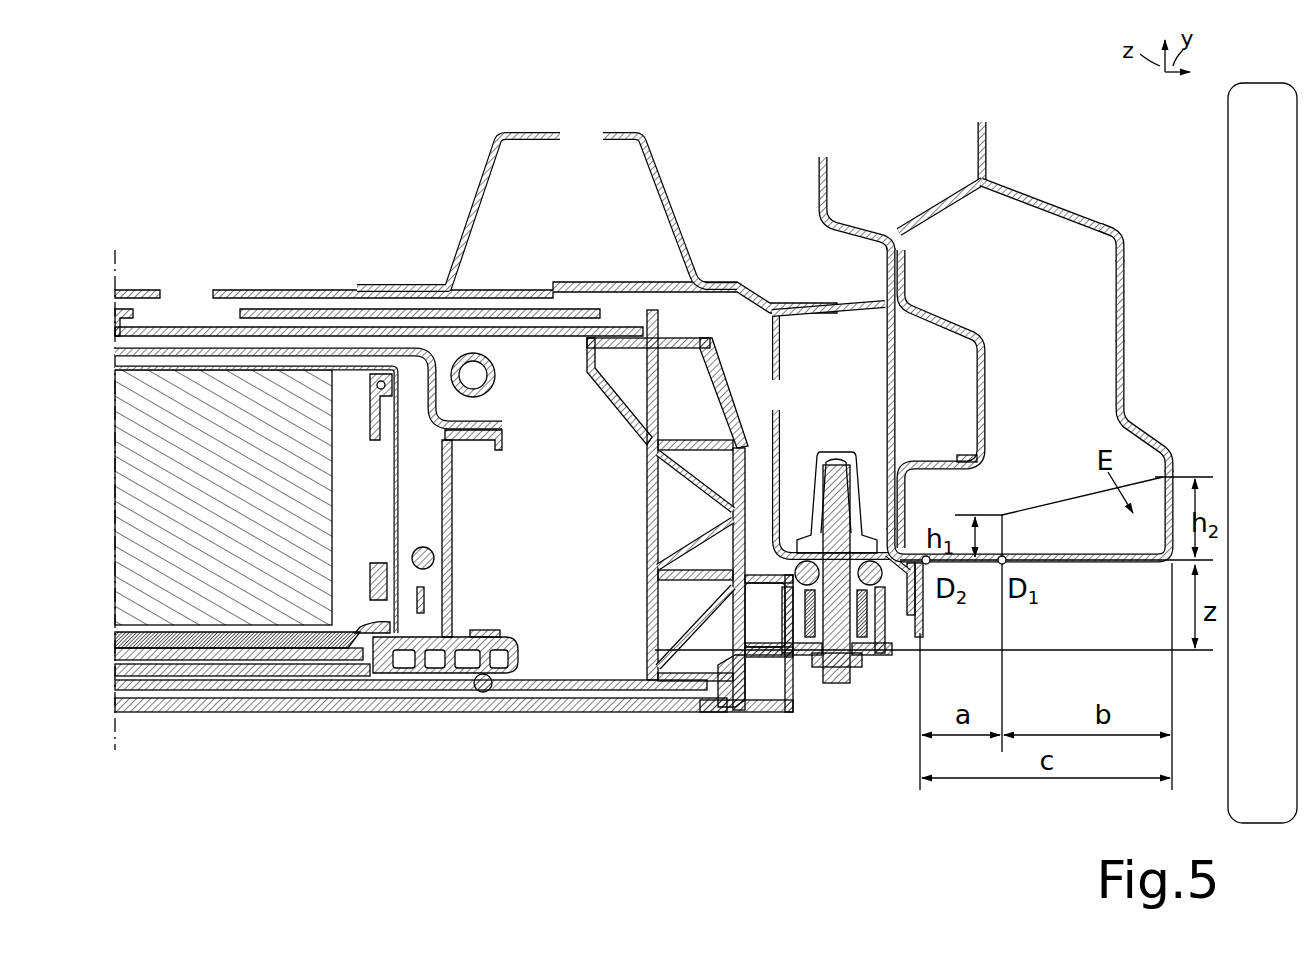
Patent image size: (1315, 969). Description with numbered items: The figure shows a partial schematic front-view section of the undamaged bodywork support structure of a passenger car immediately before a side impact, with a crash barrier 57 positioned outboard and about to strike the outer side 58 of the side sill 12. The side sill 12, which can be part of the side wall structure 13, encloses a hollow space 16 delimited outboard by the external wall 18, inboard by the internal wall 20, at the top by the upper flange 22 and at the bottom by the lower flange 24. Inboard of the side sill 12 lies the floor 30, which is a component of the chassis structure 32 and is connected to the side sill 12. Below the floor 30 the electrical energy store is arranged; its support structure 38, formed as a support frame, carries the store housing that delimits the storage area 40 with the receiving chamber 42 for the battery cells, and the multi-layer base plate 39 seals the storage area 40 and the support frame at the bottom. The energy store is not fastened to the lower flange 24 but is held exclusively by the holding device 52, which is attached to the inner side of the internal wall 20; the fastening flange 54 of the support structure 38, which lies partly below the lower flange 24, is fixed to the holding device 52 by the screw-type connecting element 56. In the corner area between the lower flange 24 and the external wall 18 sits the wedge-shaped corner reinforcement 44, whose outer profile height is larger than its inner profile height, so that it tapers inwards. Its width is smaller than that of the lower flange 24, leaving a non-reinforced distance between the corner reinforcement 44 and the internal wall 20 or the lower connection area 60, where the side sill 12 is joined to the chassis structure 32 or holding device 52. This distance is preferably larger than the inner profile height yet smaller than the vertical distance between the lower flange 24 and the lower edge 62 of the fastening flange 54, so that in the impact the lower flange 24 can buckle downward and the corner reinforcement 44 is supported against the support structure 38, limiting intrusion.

The side sill 12 is at (1041, 196).
The side wall structure 13 is at (988, 118).
The hollow space 16 is at (1012, 291).
The external wall 18 is at (1124, 272).
The internal wall 20 is at (930, 215).
The upper flange 22 is at (1101, 217).
The lower flange 24 is at (1098, 566).
The floor 30 is at (243, 288).
The chassis structure 32 is at (304, 286).
The support structure 38 is at (670, 637).
The base plate 39 is at (412, 713).
The storage area 40 is at (153, 520).
The receiving chamber 42 is at (253, 514).
The corner reinforcement 44 is at (1076, 504).
The holding device 52 is at (793, 562).
The fastening flange 54 is at (807, 655).
The connecting element 56 is at (835, 500).
The crash barrier 57 is at (1230, 163).
The outer side 58 is at (1124, 313).
The lower connection area 60 is at (923, 598).
The lower edge 62 is at (877, 647).